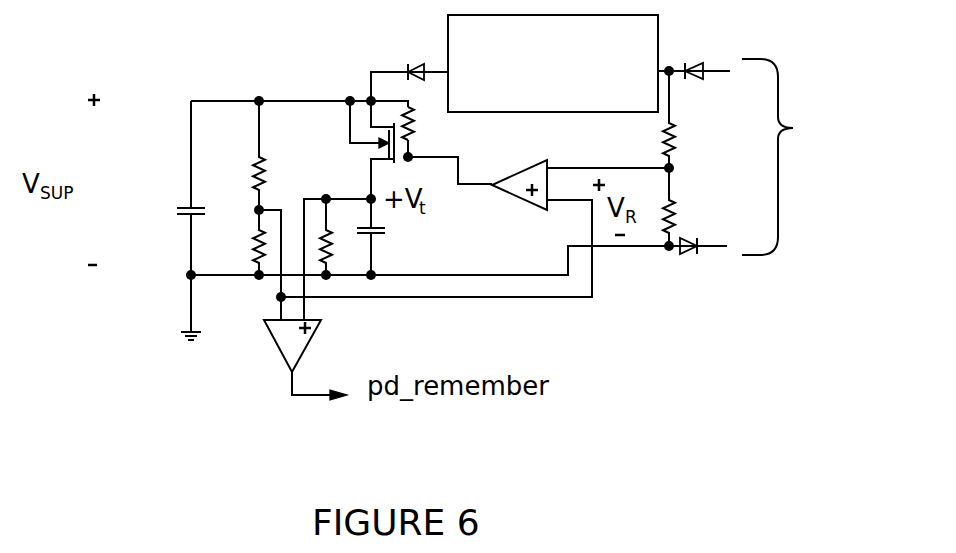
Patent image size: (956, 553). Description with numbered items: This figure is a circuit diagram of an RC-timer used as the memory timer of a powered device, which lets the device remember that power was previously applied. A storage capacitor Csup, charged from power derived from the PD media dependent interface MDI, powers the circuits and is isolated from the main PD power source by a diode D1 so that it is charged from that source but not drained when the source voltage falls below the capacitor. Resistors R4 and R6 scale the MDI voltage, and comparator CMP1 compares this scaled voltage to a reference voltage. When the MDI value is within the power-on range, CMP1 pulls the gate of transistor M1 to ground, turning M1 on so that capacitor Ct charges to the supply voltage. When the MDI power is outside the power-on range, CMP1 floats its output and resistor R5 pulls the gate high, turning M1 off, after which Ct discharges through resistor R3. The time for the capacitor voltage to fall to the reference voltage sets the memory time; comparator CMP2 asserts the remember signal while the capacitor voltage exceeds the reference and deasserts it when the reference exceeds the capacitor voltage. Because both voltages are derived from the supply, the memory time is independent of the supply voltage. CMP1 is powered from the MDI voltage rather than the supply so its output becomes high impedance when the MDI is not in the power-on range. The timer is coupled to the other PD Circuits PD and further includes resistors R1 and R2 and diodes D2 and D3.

The storage capacitor Csup is at (160, 199).
The resistor R1 is at (241, 155).
The resistor R2 is at (241, 242).
The resistor R3 is at (325, 218).
The resistor R4 is at (693, 207).
The resistor R5 is at (427, 132).
The resistor R6 is at (693, 119).
The capacitor Ct is at (388, 237).
The transistor M1 is at (349, 150).
The diode D1 is at (415, 55).
The diode D2 is at (697, 55).
The diode D3 is at (698, 265).
The PD Circuits PD is at (553, 63).
The comparator CMP1 is at (536, 169).
The comparator CMP2 is at (338, 346).
The media dependent interface MDI is at (802, 157).